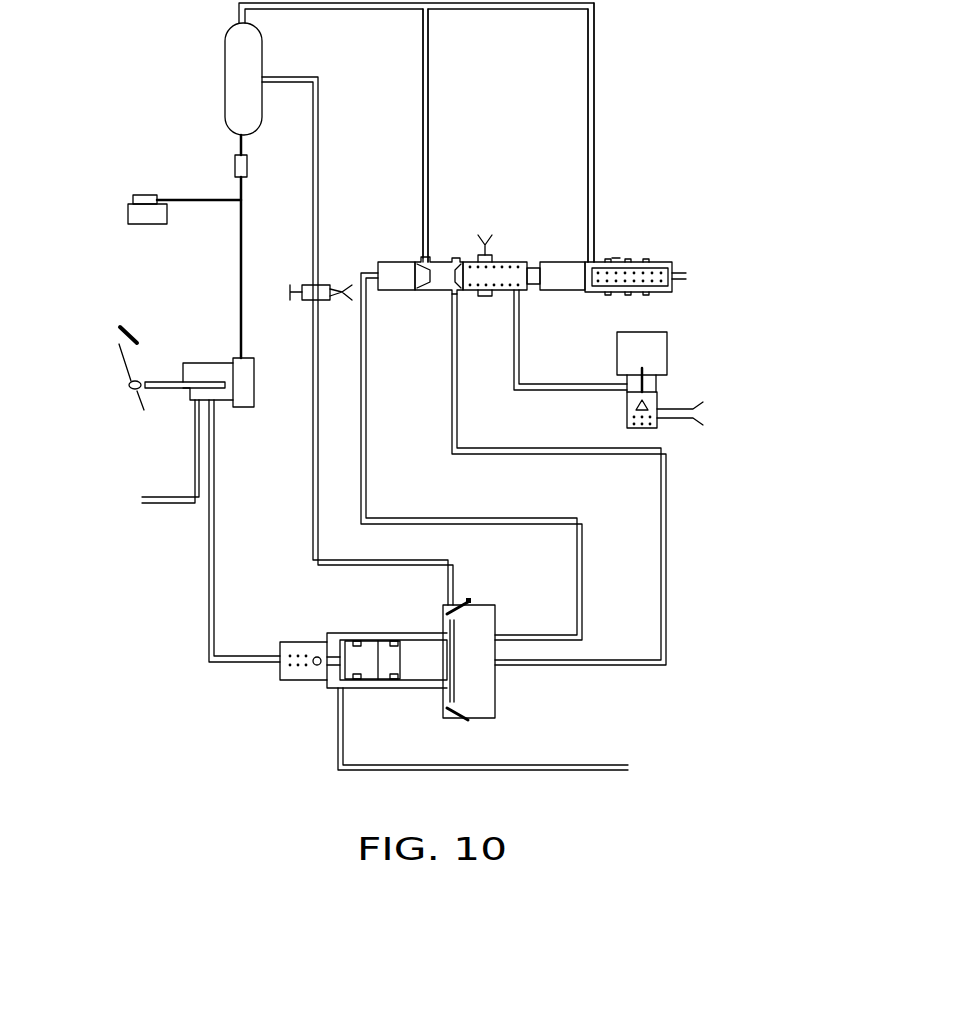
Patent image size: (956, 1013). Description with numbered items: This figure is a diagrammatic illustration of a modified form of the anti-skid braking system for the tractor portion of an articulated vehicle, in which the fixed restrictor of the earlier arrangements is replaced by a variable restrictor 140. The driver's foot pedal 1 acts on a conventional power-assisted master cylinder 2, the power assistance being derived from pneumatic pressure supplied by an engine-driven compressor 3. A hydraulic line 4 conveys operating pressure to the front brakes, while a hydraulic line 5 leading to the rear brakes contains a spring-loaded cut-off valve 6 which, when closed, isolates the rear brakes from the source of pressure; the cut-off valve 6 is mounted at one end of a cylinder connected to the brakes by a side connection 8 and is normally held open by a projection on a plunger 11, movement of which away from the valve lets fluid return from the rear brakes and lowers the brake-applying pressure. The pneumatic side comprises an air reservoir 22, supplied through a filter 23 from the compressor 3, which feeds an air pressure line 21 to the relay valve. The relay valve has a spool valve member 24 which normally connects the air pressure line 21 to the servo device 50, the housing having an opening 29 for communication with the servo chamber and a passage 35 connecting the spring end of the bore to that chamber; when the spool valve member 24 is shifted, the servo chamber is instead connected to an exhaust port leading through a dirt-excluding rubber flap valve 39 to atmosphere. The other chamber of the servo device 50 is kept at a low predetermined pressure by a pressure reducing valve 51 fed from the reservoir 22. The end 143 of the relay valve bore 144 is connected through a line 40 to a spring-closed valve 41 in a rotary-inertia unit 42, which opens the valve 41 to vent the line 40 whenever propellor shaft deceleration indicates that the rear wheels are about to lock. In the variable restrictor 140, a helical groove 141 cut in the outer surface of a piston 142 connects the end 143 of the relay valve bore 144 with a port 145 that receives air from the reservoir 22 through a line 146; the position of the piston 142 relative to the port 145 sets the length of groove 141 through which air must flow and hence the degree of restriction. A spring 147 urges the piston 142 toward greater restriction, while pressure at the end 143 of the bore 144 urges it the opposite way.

The foot pedal 1 is at (131, 370).
The master cylinder 2 is at (254, 372).
The compressor 3 is at (167, 214).
The hydraulic line 4 is at (170, 497).
The hydraulic line 5 is at (214, 465).
The cut-off valve 6 is at (315, 655).
The side connection 8 is at (395, 765).
The plunger 11 is at (368, 655).
The air pressure line 21 is at (428, 126).
The air reservoir 22 is at (262, 46).
The filter 23 is at (247, 164).
The spool valve member 24 is at (443, 278).
The opening 29 is at (452, 418).
The passage 35 is at (366, 392).
The flap valve 39 is at (485, 242).
The line 40 is at (512, 368).
The spring-closed valve 41 is at (627, 403).
The rotary-inertia unit 42 is at (617, 352).
The servo device 50 is at (487, 602).
The pressure reducing valve 51 is at (304, 285).
The variable restrictor 140 is at (651, 254).
The helical groove 141 is at (616, 252).
The piston 142 is at (605, 293).
The end of relay valve bore 143 is at (568, 282).
The relay valve bore 144 is at (507, 250).
The port 145 is at (524, 262).
The line 146 is at (588, 97).
The spring 147 is at (665, 262).